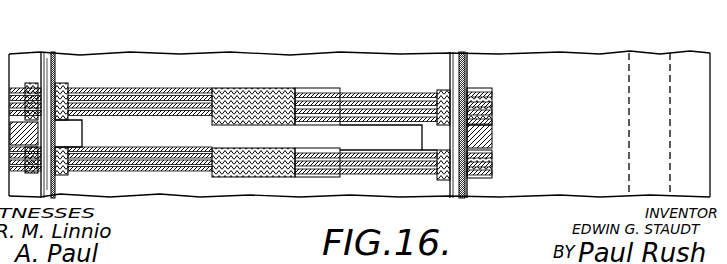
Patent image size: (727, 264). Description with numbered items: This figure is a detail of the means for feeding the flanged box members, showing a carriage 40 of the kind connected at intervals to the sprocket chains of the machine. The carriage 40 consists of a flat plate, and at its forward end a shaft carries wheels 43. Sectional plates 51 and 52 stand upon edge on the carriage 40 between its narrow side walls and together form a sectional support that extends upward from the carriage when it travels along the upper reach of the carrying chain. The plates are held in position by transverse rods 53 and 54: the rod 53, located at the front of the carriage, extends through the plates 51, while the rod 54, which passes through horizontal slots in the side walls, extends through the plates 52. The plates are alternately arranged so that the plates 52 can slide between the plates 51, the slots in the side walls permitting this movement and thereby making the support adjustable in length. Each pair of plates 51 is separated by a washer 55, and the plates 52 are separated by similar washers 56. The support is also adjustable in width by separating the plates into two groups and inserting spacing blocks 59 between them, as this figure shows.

The carriage 40 is at (565, 65).
The wheels 43 is at (122, 0).
The sectional plates 51 is at (150, 95).
The sectional plates 52 is at (323, 160).
The transverse rod 53 is at (49, 55).
The transverse rod 54 is at (462, 55).
The washer 55 is at (65, 81).
The washers 56 is at (477, 100).
The spacing blocks 59 is at (100, 102).